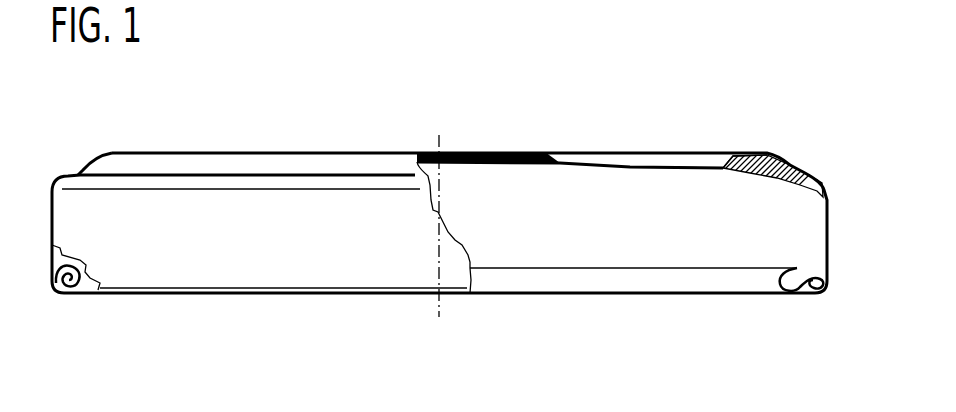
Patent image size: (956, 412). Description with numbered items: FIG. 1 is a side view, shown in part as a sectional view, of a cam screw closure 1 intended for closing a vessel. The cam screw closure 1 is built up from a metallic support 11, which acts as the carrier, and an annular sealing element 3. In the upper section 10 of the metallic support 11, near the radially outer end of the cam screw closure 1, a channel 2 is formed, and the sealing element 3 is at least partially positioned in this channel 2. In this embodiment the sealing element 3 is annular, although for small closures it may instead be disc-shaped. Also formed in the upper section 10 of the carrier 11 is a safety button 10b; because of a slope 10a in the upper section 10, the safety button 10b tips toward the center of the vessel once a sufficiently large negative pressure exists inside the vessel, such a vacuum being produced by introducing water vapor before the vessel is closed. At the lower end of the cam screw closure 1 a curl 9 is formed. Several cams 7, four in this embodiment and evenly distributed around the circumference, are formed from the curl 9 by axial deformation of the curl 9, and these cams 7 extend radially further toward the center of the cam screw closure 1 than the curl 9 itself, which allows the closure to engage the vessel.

The cam screw closure 1 is at (526, 125).
The metallic support 11 is at (104, 132).
The upper section 10 is at (634, 143).
The slope 10a is at (568, 165).
The safety button 10b is at (478, 163).
The channel 2 is at (733, 155).
The sealing element 3 is at (765, 157).
The curl 9 is at (85, 293).
The cams 7 is at (797, 287).